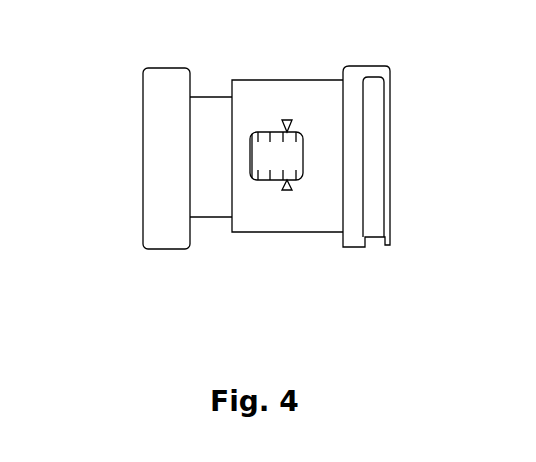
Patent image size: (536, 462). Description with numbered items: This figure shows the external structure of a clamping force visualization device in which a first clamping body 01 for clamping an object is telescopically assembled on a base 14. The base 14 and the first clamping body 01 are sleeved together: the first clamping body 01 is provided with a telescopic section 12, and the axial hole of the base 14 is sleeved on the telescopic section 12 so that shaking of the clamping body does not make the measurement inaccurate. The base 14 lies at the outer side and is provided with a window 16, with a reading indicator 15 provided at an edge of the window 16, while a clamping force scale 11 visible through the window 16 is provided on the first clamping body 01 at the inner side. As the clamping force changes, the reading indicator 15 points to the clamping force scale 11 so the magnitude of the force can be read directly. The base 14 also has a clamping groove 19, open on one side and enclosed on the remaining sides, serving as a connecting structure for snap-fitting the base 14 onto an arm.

The first clamping body 01 is at (157, 139).
The clamping force scale 11 is at (252, 105).
The telescopic section 12 is at (200, 196).
The base 14 is at (287, 188).
The reading indicator 15 is at (304, 110).
The window 16 is at (253, 150).
The clamping groove 19 is at (365, 181).